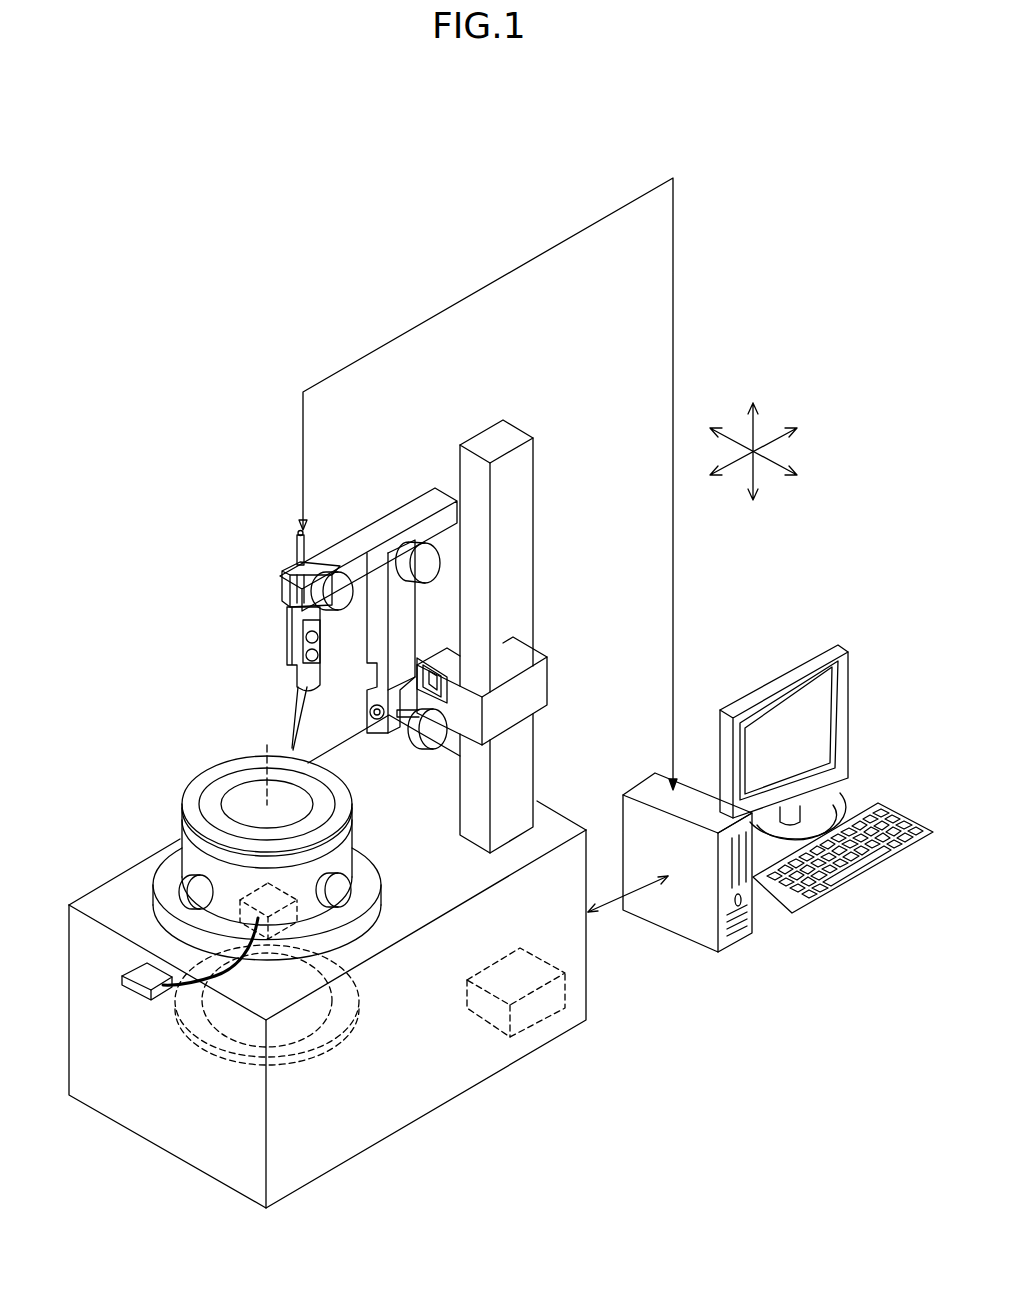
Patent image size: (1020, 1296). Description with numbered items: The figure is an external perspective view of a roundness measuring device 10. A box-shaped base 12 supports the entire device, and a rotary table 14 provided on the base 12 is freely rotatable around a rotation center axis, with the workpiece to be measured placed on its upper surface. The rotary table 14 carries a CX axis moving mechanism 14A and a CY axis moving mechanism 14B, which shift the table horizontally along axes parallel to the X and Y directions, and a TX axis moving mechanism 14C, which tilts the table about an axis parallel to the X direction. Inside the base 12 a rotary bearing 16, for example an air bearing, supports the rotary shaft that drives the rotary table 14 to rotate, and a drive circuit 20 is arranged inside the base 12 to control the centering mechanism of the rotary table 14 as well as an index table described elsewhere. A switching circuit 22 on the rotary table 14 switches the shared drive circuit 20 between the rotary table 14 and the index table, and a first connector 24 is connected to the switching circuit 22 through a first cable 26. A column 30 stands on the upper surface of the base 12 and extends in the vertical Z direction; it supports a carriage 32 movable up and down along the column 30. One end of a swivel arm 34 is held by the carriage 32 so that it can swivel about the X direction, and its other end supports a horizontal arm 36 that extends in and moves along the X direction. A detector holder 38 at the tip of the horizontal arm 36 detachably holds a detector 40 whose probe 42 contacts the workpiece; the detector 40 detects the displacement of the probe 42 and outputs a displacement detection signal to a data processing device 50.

The roundness measuring device 10 is at (190, 536).
The base 12 is at (445, 1068).
The rotary table 14 is at (176, 852).
The CX axis moving mechanism 14A is at (355, 820).
The CY axis moving mechanism 14B is at (340, 892).
The TX axis moving mechanism 14C is at (192, 893).
The rotary bearing 16 is at (312, 1030).
The drive circuit 20 is at (538, 1005).
The switching circuit 22 is at (297, 900).
The first connector 24 is at (138, 965).
The first cable 26 is at (207, 982).
The column 30 is at (518, 525).
The carriage 32 is at (528, 688).
The swivel arm 34 is at (404, 607).
The horizontal arm 36 is at (380, 525).
The detector holder 38 is at (283, 592).
The detector 40 is at (318, 698).
The probe 42 is at (300, 712).
The data processing device 50 is at (790, 675).